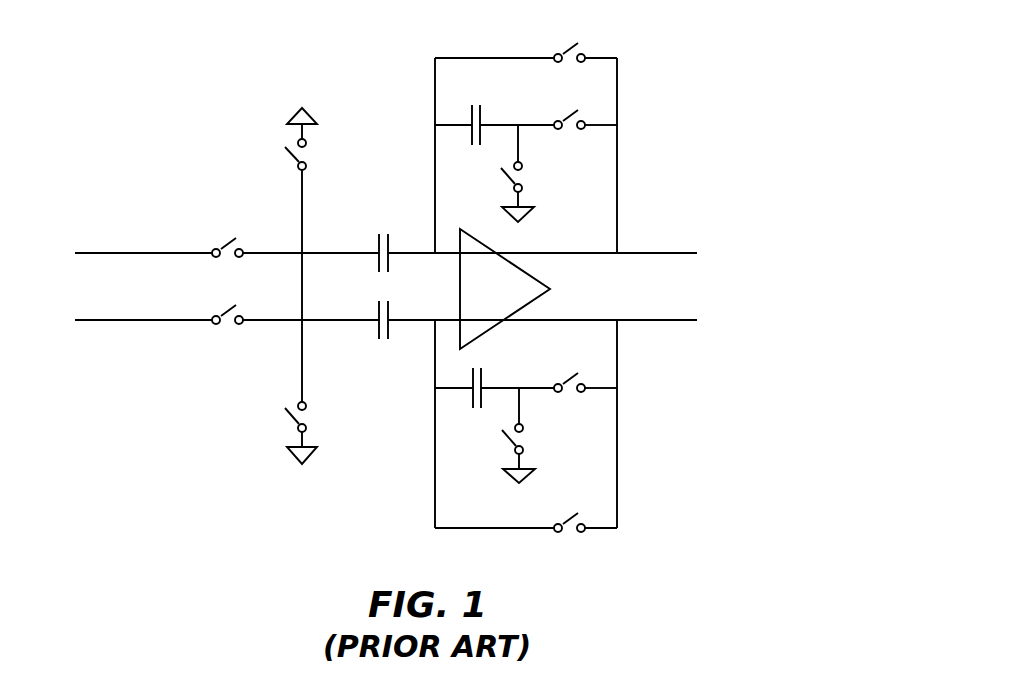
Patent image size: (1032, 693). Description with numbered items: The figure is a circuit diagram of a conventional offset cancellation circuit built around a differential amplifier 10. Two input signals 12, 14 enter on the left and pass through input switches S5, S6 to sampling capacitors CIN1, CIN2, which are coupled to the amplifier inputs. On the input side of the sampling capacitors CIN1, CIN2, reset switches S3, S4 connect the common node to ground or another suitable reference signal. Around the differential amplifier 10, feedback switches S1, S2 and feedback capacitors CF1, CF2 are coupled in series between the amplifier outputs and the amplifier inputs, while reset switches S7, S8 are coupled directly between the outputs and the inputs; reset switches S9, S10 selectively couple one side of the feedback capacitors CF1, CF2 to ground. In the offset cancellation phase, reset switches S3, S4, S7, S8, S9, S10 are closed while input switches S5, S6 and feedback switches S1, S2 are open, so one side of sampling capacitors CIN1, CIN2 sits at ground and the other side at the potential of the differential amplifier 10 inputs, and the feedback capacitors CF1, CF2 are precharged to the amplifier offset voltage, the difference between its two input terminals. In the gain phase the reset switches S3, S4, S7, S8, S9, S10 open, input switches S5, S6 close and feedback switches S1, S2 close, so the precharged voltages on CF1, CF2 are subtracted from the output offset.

The differential amplifier 10 is at (552, 285).
The input signal 12 is at (115, 253).
The input signal 14 is at (115, 320).
The feedback switch S1 is at (585, 107).
The feedback switch S2 is at (585, 371).
The reset switch S3 is at (284, 180).
The reset switch S4 is at (284, 358).
The input switch S5 is at (228, 235).
The input switch S6 is at (228, 303).
The reset switch S7 is at (526, 39).
The reset switch S8 is at (526, 510).
The reset switch S9 is at (498, 173).
The reset switch S10 is at (494, 435).
The sampling capacitor CIN1 is at (382, 239).
The sampling capacitor CIN2 is at (382, 336).
The feedback capacitor CF1 is at (494, 115).
The feedback capacitor CF2 is at (494, 380).